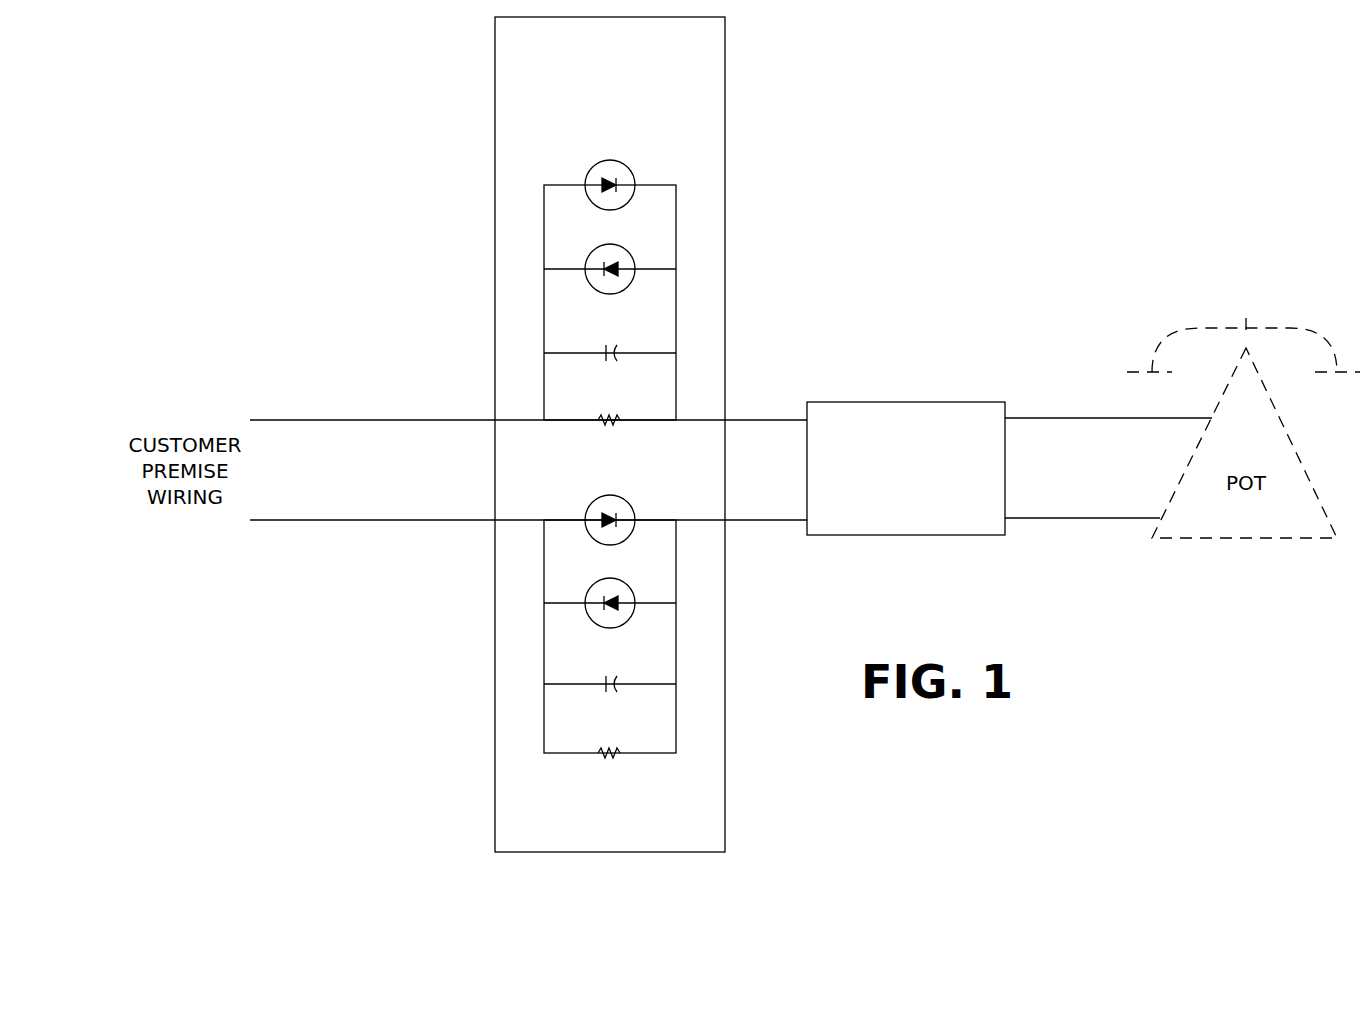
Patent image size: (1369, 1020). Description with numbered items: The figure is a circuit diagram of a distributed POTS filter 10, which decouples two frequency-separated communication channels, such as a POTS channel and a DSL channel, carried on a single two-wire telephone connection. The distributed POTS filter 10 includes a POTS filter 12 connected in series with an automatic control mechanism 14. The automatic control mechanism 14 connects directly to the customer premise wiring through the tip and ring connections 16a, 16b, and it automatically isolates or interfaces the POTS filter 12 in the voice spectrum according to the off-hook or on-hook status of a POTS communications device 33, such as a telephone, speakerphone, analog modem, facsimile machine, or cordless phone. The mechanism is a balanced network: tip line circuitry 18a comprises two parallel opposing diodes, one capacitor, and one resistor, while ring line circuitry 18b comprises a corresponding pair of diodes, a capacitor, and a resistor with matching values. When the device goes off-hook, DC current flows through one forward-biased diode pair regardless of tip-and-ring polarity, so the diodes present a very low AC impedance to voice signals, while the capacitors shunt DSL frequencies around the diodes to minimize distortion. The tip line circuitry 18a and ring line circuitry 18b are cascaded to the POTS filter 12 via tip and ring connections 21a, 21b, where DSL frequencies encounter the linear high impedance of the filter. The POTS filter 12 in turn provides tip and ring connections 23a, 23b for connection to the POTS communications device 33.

The distributed POTS filter 10 is at (953, 129).
The POTS filter 12 is at (906, 402).
The automatic control mechanism 14 is at (724, 100).
The tip connection 16a is at (382, 420).
The ring connection 16b is at (382, 520).
The tip line circuitry 18a is at (709, 277).
The ring line circuitry 18b is at (528, 634).
The tip connection 21a is at (748, 420).
The ring connection 21b is at (742, 520).
The tip connection 23a is at (1021, 418).
The ring connection 23b is at (1037, 518).
The POTS communications device 33 is at (1246, 318).